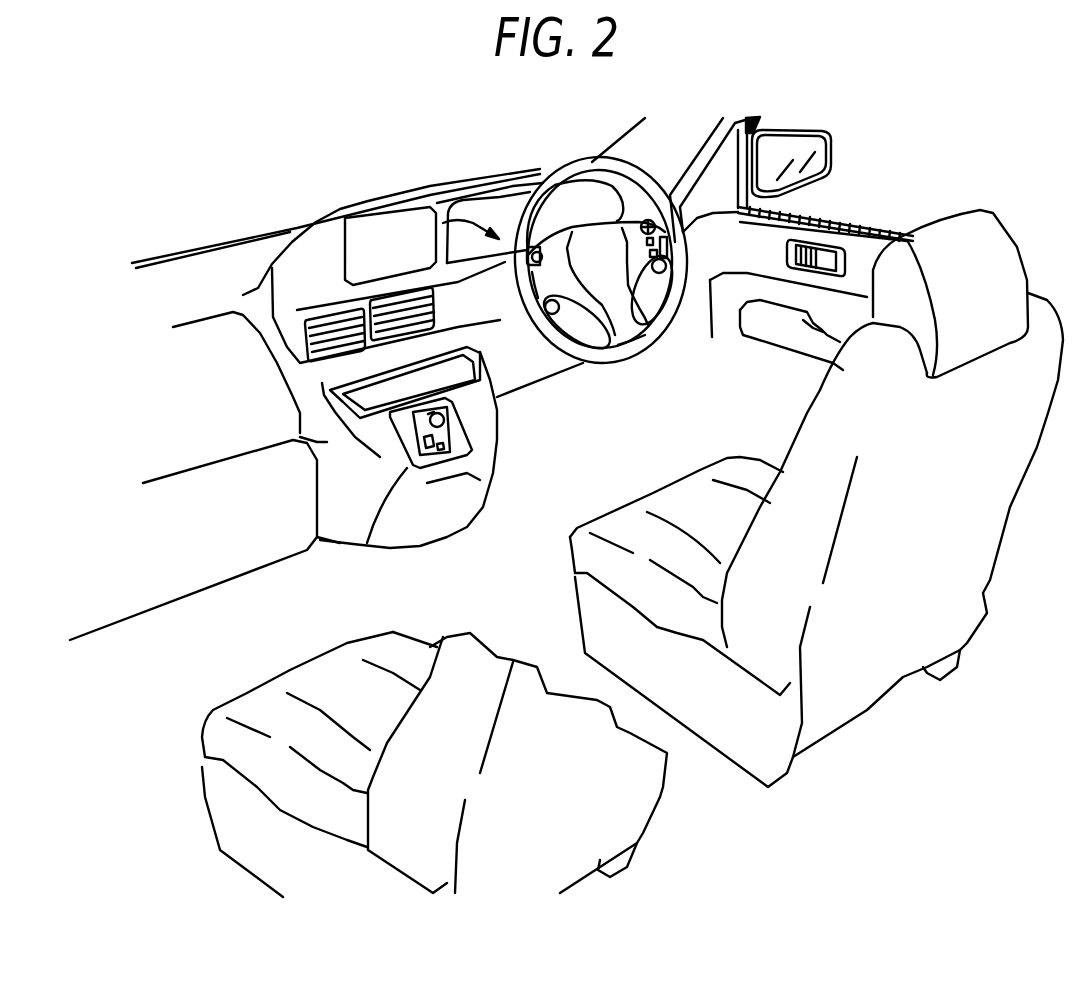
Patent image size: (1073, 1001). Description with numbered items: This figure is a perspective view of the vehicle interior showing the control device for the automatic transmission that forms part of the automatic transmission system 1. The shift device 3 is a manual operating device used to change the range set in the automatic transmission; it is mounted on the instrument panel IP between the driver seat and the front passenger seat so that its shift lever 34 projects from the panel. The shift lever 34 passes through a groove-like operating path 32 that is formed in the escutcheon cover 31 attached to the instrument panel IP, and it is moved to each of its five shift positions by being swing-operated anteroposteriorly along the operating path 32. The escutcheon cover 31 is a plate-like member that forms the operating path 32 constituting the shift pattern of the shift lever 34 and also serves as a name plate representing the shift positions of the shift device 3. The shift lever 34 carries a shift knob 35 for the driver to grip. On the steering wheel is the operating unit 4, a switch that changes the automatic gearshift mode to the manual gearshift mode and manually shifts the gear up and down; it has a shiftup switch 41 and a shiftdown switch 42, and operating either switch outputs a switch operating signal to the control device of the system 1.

The automatic transmission system 1 is at (394, 396).
The shift device 3 is at (491, 453).
The escutcheon cover 31 is at (468, 486).
The operating path 32 is at (440, 450).
The shift lever 34 is at (430, 452).
The shift knob 35 is at (443, 417).
The operating unit 4 is at (525, 253).
The shiftup switch 41 is at (662, 272).
The shiftdown switch 42 is at (556, 313).
The instrument panel IP is at (390, 443).